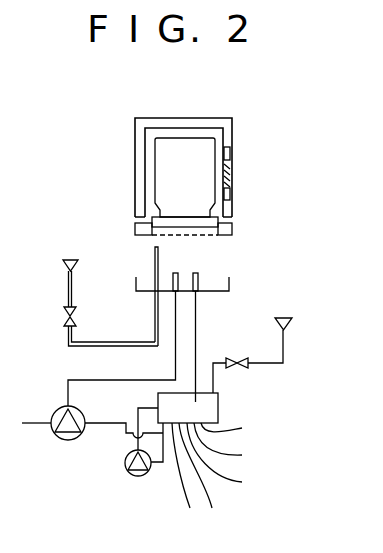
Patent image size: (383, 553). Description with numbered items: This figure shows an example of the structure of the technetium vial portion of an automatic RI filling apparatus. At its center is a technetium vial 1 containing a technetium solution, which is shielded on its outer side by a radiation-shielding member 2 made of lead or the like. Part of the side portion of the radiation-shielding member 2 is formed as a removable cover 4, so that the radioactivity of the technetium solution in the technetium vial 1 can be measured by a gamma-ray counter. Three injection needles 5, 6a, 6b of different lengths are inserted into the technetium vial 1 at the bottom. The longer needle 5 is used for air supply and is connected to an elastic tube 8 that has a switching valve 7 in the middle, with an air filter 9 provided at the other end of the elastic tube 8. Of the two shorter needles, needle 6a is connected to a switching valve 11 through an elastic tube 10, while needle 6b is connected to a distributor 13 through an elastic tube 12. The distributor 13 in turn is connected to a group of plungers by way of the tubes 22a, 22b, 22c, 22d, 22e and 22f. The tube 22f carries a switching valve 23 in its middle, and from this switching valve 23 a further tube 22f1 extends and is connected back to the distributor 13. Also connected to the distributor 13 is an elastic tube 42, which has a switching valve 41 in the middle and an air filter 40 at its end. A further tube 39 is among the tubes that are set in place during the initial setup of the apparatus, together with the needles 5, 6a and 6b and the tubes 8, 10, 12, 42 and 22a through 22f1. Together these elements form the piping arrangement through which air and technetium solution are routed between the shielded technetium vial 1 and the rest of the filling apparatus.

The technetium vial 1 is at (197, 147).
The radiation-shielding member 2 is at (135, 157).
The removable cover 4 is at (232, 168).
The injection needle 5 is at (154, 254).
The injection needle 6a is at (174, 273).
The injection needle 6b is at (197, 272).
The switching valve 7 is at (67, 308).
The elastic tube 8 is at (73, 350).
The air filter 9 is at (63, 262).
The elastic tube 10 is at (131, 363).
The switching valve 11 is at (66, 449).
The elastic tube 12 is at (197, 310).
The distributor 13 is at (220, 407).
The tube 22a is at (241, 432).
The tube 22b is at (238, 446).
The tube 22c is at (234, 459).
The tube 22d is at (218, 478).
The tube 22e is at (185, 478).
The tube 22f is at (158, 465).
The tube 22f1 is at (147, 407).
The switching valve 23 is at (127, 473).
The tube 39 is at (97, 426).
The air filter 40 is at (293, 325).
The switching valve 41 is at (243, 360).
The elastic tube 42 is at (224, 360).